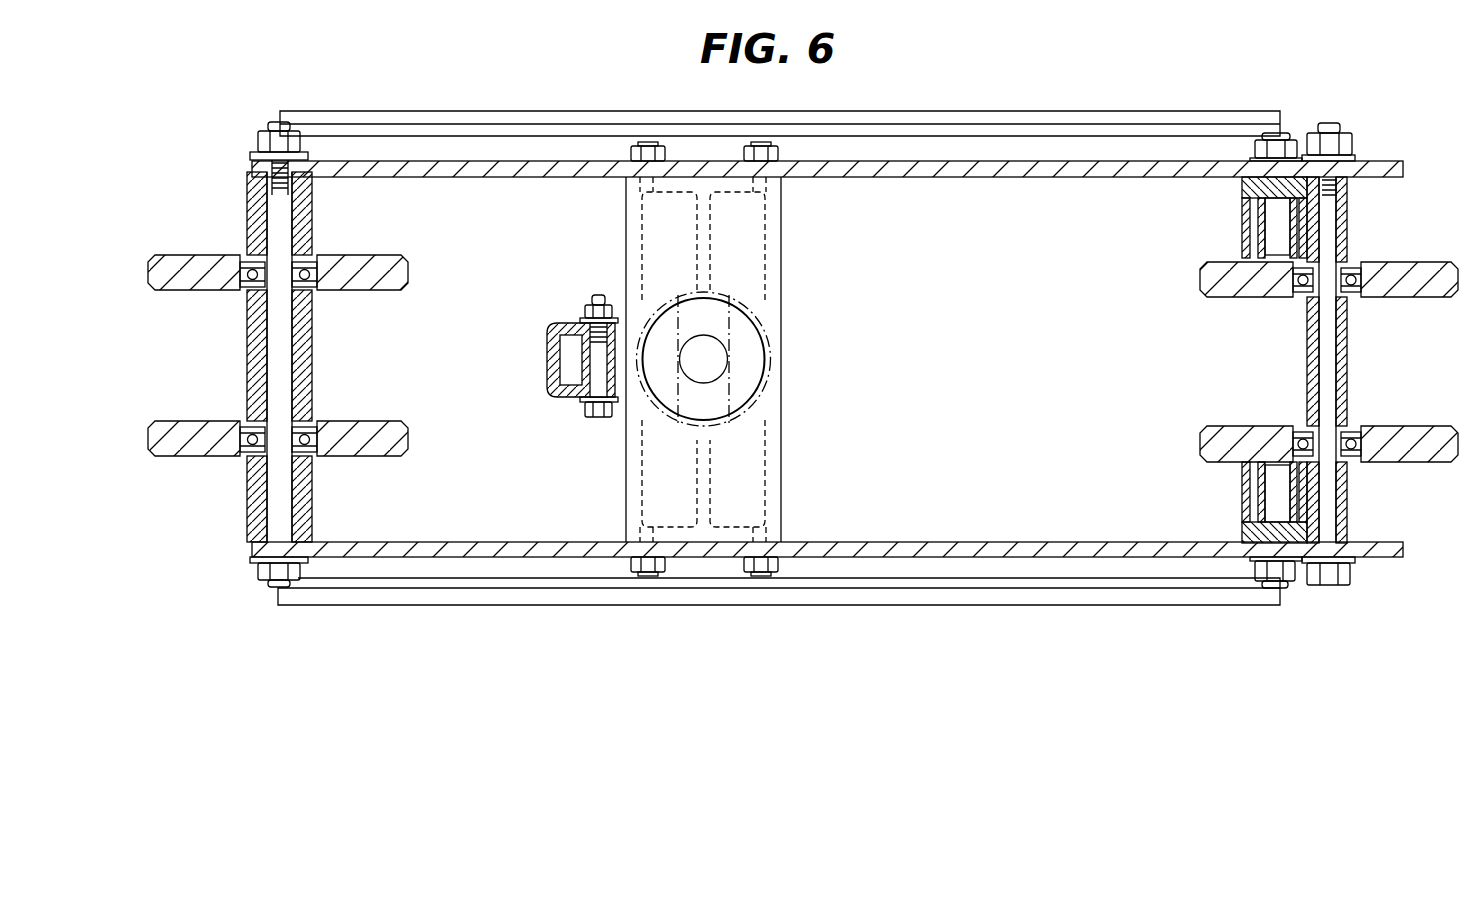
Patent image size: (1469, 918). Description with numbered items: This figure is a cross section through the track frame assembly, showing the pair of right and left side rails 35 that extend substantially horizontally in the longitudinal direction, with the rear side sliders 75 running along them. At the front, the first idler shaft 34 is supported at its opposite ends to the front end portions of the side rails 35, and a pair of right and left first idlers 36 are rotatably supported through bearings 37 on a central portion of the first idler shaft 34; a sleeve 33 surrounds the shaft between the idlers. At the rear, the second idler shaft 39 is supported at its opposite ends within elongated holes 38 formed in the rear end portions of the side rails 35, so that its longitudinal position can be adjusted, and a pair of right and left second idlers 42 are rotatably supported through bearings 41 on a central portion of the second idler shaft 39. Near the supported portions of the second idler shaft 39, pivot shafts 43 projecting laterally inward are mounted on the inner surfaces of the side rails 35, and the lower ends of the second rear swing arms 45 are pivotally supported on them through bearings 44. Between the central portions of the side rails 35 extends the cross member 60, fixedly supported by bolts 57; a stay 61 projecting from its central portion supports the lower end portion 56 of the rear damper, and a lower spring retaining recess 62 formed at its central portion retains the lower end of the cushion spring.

The sleeve 33 is at (313, 494).
The first idler shaft 34 is at (272, 500).
The side rails 35 is at (994, 177).
The first idlers 36 is at (386, 430).
The bearings 37 is at (306, 430).
The elongated holes 38 is at (1374, 168).
The second idler shaft 39 is at (1335, 352).
The bearings 41 is at (1362, 295).
The second idlers 42 is at (1424, 270).
The pivot shafts 43 is at (1268, 188).
The bearings 44 is at (1258, 218).
The second rear swing arms 45 is at (1250, 248).
The lower end portion 56 is at (574, 296).
The bolts 57 is at (643, 575).
The cross member 60 is at (778, 465).
The stay 61 is at (573, 357).
The lower spring retaining recess 62 is at (755, 360).
The rear side sliders 75 is at (994, 140).